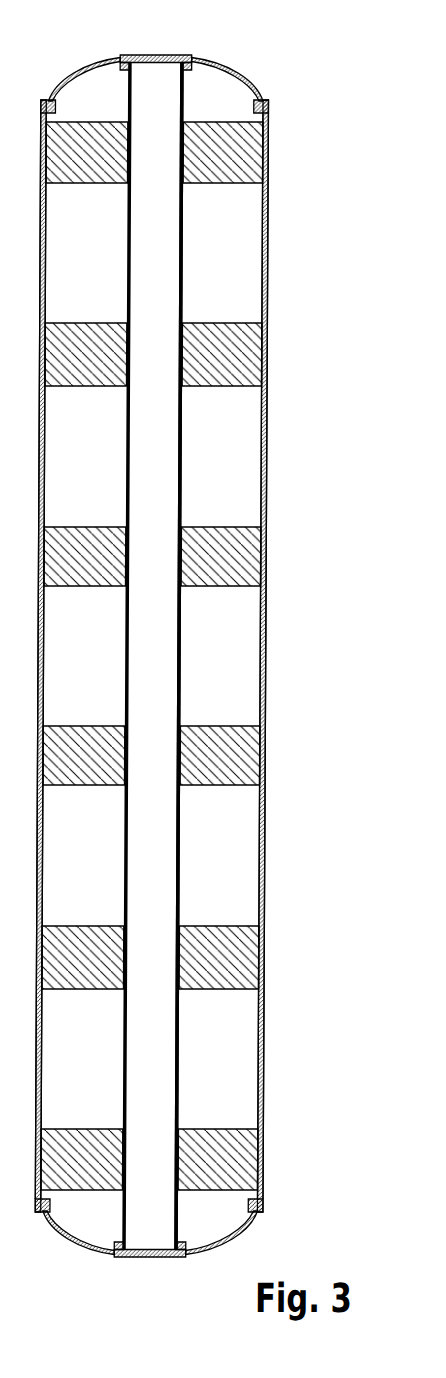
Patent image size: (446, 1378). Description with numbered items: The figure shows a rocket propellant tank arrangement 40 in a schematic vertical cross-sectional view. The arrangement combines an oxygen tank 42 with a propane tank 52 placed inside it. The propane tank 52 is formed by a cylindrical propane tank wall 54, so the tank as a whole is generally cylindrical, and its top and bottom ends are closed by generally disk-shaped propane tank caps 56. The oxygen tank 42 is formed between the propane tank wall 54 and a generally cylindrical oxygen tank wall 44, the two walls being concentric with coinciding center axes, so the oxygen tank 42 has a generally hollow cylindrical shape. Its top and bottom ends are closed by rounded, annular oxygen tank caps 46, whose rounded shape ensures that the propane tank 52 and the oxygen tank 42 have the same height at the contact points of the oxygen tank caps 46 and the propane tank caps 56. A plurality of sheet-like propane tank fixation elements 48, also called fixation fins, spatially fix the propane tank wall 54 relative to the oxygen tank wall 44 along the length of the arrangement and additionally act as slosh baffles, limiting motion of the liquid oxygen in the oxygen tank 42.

The rocket propellant tank arrangement 40 is at (305, 257).
The oxygen tank 42 is at (252, 437).
The oxygen tank wall 44 is at (265, 475).
The oxygen tank caps 46 is at (92, 66).
The propane tank fixation elements 48 is at (254, 355).
The propane tank 52 is at (163, 622).
The propane tank wall 54 is at (183, 660).
The propane tank caps 56 is at (152, 55).